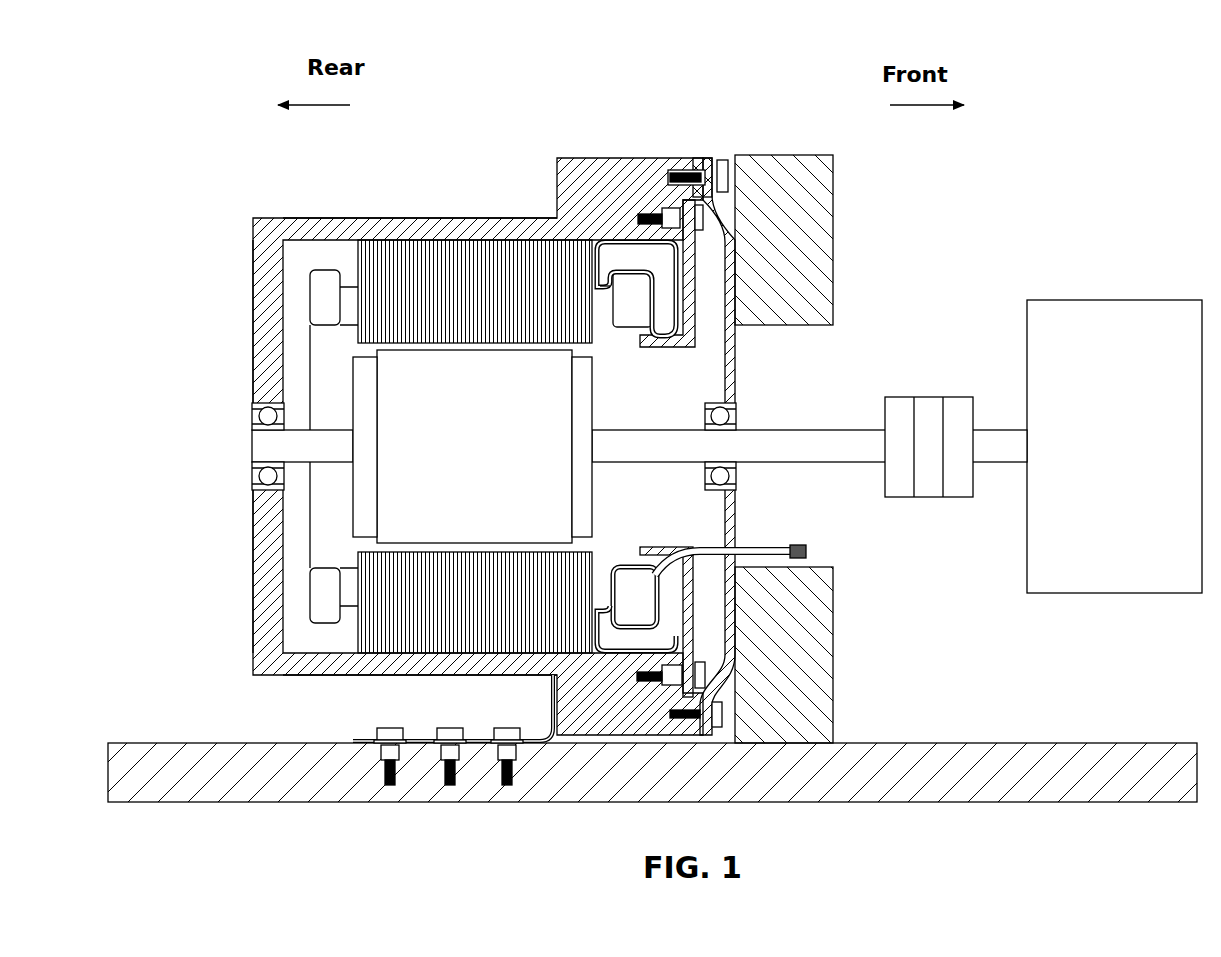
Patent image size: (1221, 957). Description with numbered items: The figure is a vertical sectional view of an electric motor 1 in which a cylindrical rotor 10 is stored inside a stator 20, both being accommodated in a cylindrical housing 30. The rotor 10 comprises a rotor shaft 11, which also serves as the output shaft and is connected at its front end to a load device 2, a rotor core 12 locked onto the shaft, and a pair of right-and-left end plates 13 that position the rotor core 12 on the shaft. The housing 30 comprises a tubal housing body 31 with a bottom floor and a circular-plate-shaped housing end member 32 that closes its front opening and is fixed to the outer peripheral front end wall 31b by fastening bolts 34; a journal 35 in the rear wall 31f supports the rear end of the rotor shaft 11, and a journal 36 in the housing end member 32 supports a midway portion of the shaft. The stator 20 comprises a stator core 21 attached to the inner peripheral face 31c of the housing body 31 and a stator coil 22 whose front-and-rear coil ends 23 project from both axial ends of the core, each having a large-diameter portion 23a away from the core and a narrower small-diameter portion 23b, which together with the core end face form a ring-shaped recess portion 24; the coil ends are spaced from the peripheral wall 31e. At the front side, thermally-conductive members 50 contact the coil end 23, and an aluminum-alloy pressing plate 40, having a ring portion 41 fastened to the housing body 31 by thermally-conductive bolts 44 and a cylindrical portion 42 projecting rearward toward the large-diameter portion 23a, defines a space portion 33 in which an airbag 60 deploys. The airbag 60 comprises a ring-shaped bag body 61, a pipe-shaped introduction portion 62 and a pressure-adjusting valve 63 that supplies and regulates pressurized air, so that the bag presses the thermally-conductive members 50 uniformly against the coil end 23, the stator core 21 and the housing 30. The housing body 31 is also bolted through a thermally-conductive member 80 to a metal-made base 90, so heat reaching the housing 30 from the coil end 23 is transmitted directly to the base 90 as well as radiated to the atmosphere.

The electric motor 1 is at (679, 112).
The load device 2 is at (1121, 459).
The rotor 10 is at (320, 490).
The rotor shaft 11 is at (858, 429).
The rotor core 12 is at (485, 459).
The end plates 13 is at (587, 498).
The stator 20 is at (344, 243).
The stator core 21 is at (486, 304).
The stator coil 22 is at (627, 332).
The coil ends 23 is at (306, 268).
The large-diameter portion 23a is at (309, 297).
The small-diameter portion 23b is at (348, 322).
The ring-shaped recess portion 24 is at (347, 612).
The housing 30 is at (425, 213).
The housing body 31 is at (477, 216).
The outer peripheral front end wall 31b is at (697, 163).
The inner peripheral face 31c is at (489, 652).
The peripheral wall 31e is at (384, 226).
The rear wall 31f is at (262, 574).
The housing end member 32 is at (740, 350).
The space portion 33 is at (690, 646).
The fastening bolts 34 is at (722, 162).
The journal 35 is at (267, 403).
The journal 36 is at (738, 406).
The pressing plate 40 is at (678, 543).
The ring portion 41 is at (695, 620).
The cylindrical portion 42 is at (646, 548).
The thermally-conductive bolts 44 is at (636, 212).
The thermally-conductive members 50 is at (601, 292).
The airbag 60 is at (662, 299).
The bag body 61 is at (668, 277).
The introduction portion 62 is at (752, 548).
The pressure-adjusting valve 63 is at (808, 550).
The thermally-conductive member 80 is at (420, 740).
The base 90 is at (1016, 744).